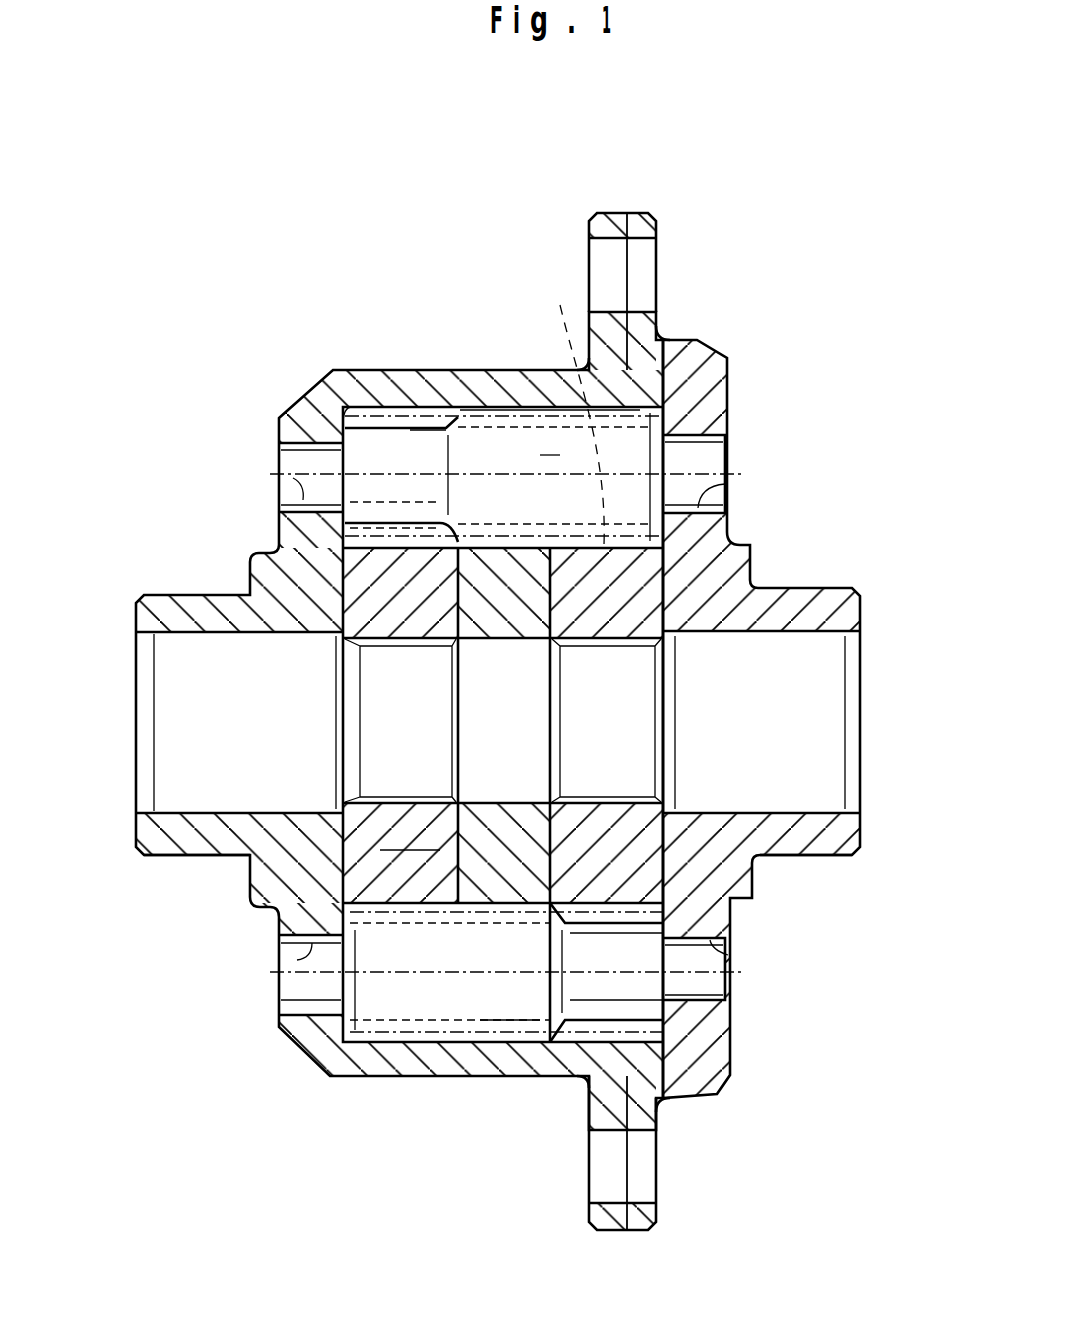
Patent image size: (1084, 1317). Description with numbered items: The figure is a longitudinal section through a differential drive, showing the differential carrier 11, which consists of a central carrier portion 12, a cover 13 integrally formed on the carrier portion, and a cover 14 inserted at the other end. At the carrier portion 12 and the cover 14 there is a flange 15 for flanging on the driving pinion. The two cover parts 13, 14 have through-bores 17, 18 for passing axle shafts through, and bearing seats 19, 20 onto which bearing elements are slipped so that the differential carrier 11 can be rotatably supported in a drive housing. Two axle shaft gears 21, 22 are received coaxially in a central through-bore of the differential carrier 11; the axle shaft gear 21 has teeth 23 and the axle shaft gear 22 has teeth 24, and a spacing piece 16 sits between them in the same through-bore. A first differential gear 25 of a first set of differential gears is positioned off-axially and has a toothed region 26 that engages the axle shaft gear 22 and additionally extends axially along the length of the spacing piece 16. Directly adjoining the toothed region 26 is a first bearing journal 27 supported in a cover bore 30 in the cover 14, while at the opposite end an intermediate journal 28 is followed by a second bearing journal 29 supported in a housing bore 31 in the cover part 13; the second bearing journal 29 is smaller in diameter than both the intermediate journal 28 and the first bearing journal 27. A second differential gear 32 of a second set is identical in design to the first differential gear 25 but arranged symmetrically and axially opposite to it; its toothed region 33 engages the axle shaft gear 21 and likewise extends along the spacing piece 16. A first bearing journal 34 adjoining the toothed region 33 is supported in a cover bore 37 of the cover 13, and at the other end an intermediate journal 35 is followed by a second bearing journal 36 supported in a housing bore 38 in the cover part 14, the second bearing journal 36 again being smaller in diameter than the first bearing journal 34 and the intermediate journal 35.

The differential carrier 11 is at (318, 260).
The central carrier portion 12 is at (476, 375).
The cover 13 is at (270, 555).
The cover 14 is at (740, 563).
The flange 15 is at (640, 328).
The spacing piece 16 is at (507, 870).
The through-bore 17 is at (188, 812).
The through-bore 18 is at (791, 812).
The bearing seat 19 is at (194, 862).
The bearing seat 20 is at (816, 858).
The axle shaft gear 21 is at (410, 862).
The axle shaft gear 22 is at (612, 868).
The teeth 23 is at (400, 538).
The teeth 24 is at (573, 421).
The first differential gear 25 is at (552, 452).
The toothed region 26 is at (523, 410).
The first bearing journal 27 is at (710, 455).
The intermediate journal 28 is at (424, 460).
The second bearing journal 29 is at (306, 455).
The cover bore 30 is at (725, 484).
The housing bore 31 is at (293, 478).
The second differential gear 32 is at (432, 995).
The toothed region 33 is at (505, 1040).
The first bearing journal 34 is at (313, 988).
The intermediate journal 35 is at (666, 1026).
The second bearing journal 36 is at (715, 980).
The cover bore 37 is at (297, 960).
The housing bore 38 is at (728, 955).